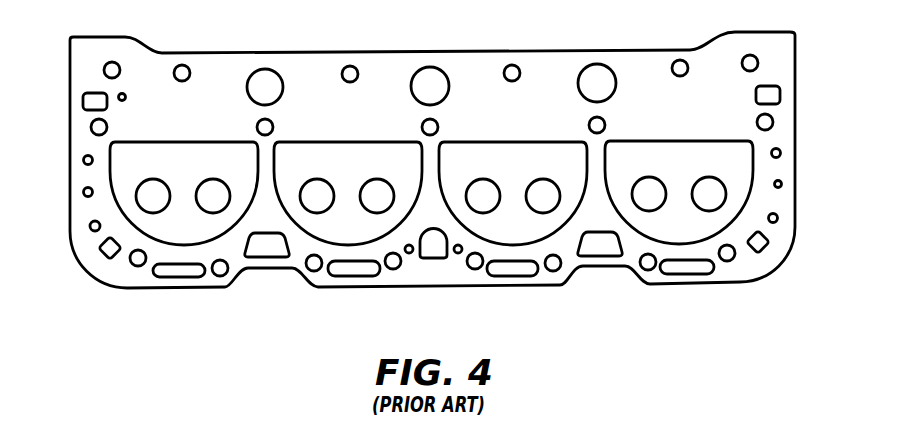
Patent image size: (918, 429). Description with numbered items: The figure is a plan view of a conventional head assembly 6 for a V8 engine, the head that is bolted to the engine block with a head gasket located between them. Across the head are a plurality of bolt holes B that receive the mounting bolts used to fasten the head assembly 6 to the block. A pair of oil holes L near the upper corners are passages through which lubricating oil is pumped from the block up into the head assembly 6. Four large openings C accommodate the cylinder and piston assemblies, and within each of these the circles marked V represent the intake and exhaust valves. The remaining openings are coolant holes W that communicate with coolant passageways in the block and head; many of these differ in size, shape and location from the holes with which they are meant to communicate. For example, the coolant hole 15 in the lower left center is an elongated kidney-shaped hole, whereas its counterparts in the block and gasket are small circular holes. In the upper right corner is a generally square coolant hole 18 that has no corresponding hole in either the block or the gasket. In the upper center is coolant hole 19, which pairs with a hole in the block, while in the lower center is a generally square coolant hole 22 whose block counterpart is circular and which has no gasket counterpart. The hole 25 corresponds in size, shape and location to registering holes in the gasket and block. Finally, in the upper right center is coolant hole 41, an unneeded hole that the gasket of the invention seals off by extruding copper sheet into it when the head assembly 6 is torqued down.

The head assembly 6 is at (802, 216).
The coolant hole 15 is at (356, 275).
The coolant hole 18 is at (773, 98).
The coolant hole 19 is at (430, 68).
The coolant hole 22 is at (432, 232).
The hole 25 is at (265, 76).
The coolant hole 41 is at (598, 70).
The oil holes L is at (105, 66).
The coolant holes W is at (86, 98).
The bolt holes B is at (91, 127).
The valves V is at (160, 206).
The cylinder holes C is at (190, 238).